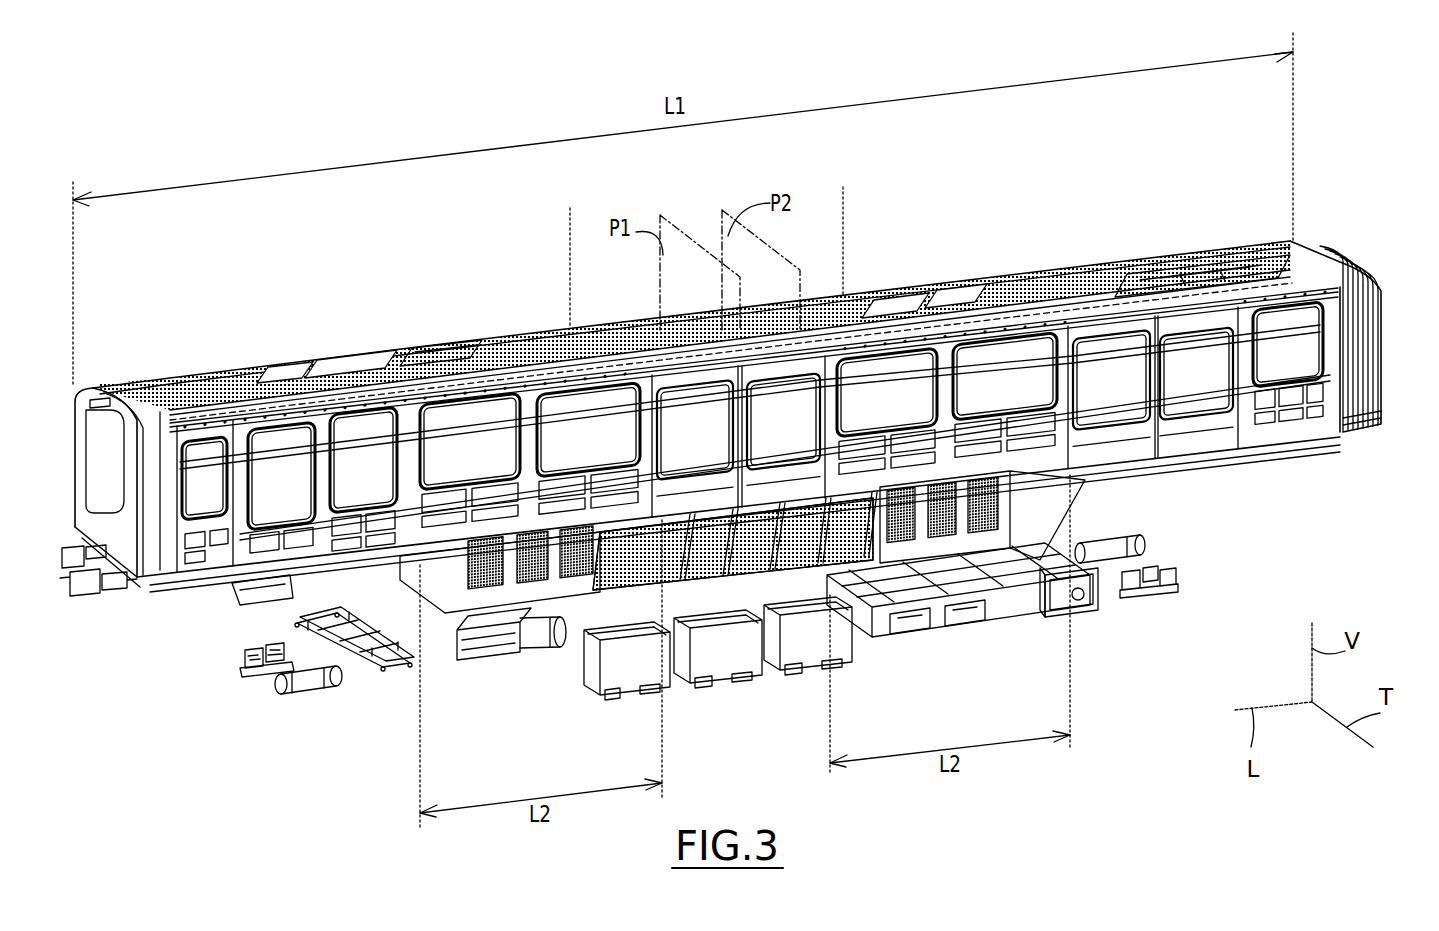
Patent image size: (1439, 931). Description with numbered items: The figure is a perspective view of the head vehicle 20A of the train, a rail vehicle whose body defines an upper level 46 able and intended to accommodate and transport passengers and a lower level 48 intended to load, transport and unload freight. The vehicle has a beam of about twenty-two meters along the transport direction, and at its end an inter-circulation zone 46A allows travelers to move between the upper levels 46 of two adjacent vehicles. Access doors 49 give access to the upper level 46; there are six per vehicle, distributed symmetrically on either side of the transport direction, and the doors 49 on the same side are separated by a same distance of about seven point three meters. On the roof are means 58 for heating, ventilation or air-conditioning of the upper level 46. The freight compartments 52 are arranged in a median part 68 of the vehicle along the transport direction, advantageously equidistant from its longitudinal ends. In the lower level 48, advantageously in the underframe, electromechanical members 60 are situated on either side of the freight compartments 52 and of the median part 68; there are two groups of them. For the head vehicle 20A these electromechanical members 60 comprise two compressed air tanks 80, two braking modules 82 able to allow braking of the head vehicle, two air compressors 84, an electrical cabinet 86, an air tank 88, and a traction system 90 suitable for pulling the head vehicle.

The head vehicle 20A is at (313, 277).
The upper level 46 is at (900, 367).
The inter-circulation zone 46A is at (1373, 367).
The lower level 48 is at (647, 533).
The access doors 49 is at (677, 393).
The freight compartments 52 is at (803, 657).
The means for heating, ventilation or air-conditioning 58 is at (273, 373).
The electromechanical members 60 is at (578, 714).
The median part 68 is at (570, 205).
The compressed air tanks 80 is at (298, 688).
The braking modules 82 is at (243, 672).
The air compressors 84 is at (407, 667).
The electrical cabinet 86 is at (482, 653).
The air tank 88 is at (530, 653).
The traction system 90 is at (1003, 612).